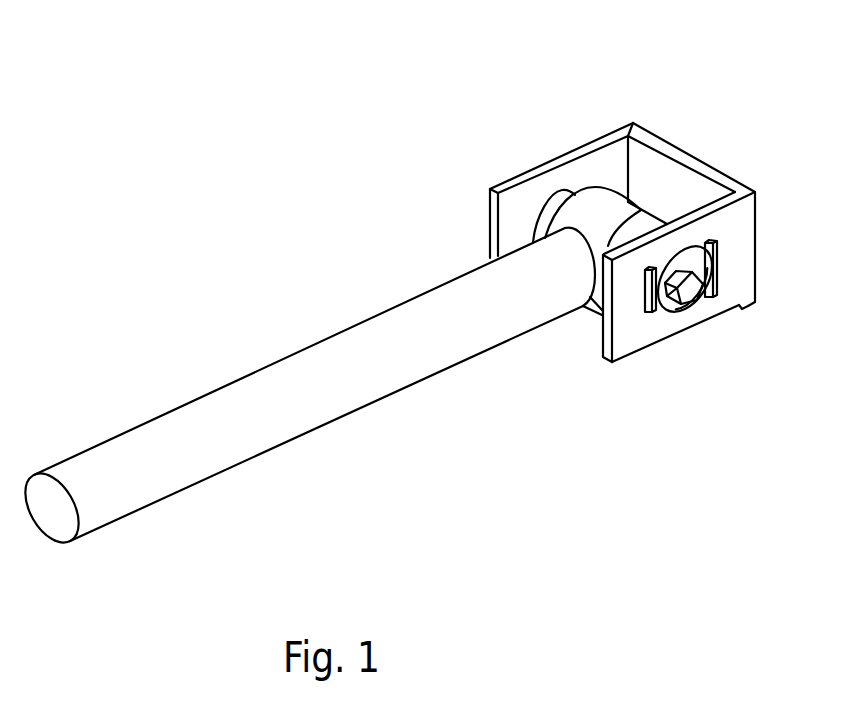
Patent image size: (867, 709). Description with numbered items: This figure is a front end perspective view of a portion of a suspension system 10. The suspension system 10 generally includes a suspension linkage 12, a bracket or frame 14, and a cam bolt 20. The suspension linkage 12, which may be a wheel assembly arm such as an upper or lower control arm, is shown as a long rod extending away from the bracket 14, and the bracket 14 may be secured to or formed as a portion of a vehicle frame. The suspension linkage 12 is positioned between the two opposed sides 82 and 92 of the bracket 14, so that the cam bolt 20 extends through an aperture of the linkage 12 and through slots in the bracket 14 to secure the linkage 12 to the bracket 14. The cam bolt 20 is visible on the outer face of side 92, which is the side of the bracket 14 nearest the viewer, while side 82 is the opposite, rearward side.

The suspension system 10 is at (212, 262).
The suspension linkage 12 is at (305, 396).
The bracket or frame 14 is at (673, 153).
The cam bolt 20 is at (691, 297).
The side of bracket 82 is at (532, 170).
The side of bracket 92 is at (633, 337).